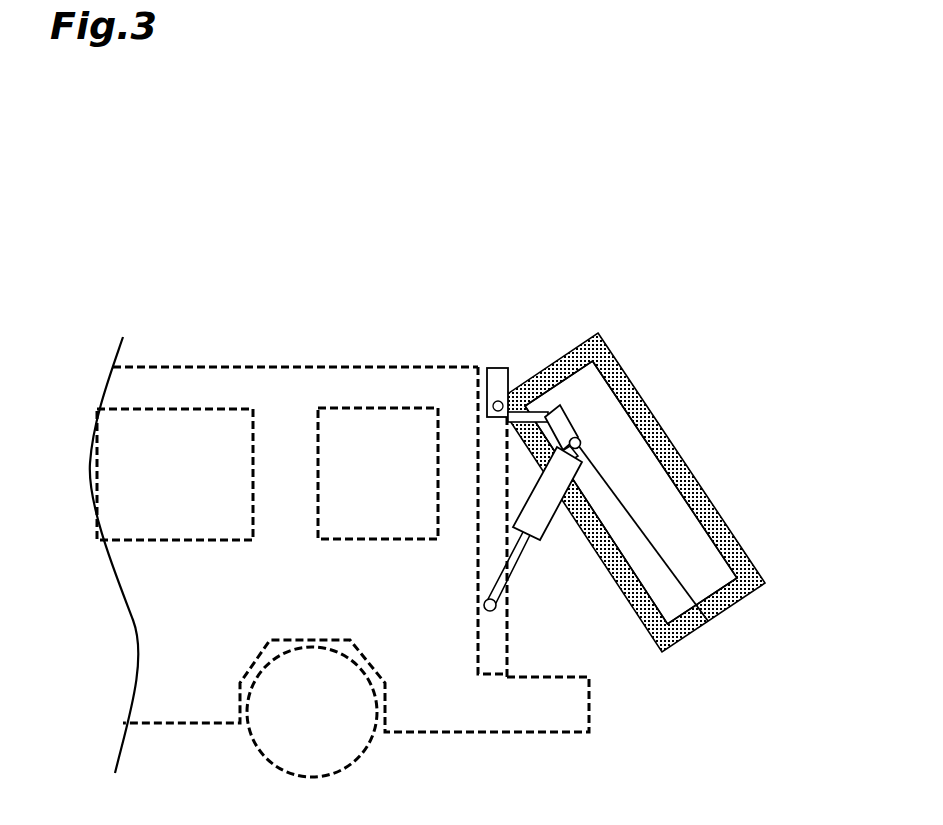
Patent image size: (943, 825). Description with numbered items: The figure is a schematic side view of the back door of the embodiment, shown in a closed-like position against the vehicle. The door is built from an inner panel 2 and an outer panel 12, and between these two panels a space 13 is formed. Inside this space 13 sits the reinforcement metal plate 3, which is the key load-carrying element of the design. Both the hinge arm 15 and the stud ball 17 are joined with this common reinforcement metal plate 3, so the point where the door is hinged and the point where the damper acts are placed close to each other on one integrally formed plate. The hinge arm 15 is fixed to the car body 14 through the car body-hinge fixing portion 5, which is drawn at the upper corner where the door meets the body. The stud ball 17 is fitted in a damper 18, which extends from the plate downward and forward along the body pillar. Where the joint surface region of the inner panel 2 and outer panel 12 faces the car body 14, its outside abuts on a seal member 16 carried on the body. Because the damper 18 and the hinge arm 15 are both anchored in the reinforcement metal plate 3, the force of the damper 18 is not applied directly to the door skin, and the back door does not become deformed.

The inner panel 2 is at (657, 499).
The reinforcement metal plate 3 is at (562, 427).
The car body-hinge fixing portion 5 is at (497, 383).
The outer panel 12 is at (677, 460).
The space 13 is at (682, 537).
The car body 14 is at (287, 395).
The hinge arm 15 is at (533, 410).
The seal member 16 is at (488, 482).
The stud ball 17 is at (578, 442).
The damper 18 is at (540, 505).